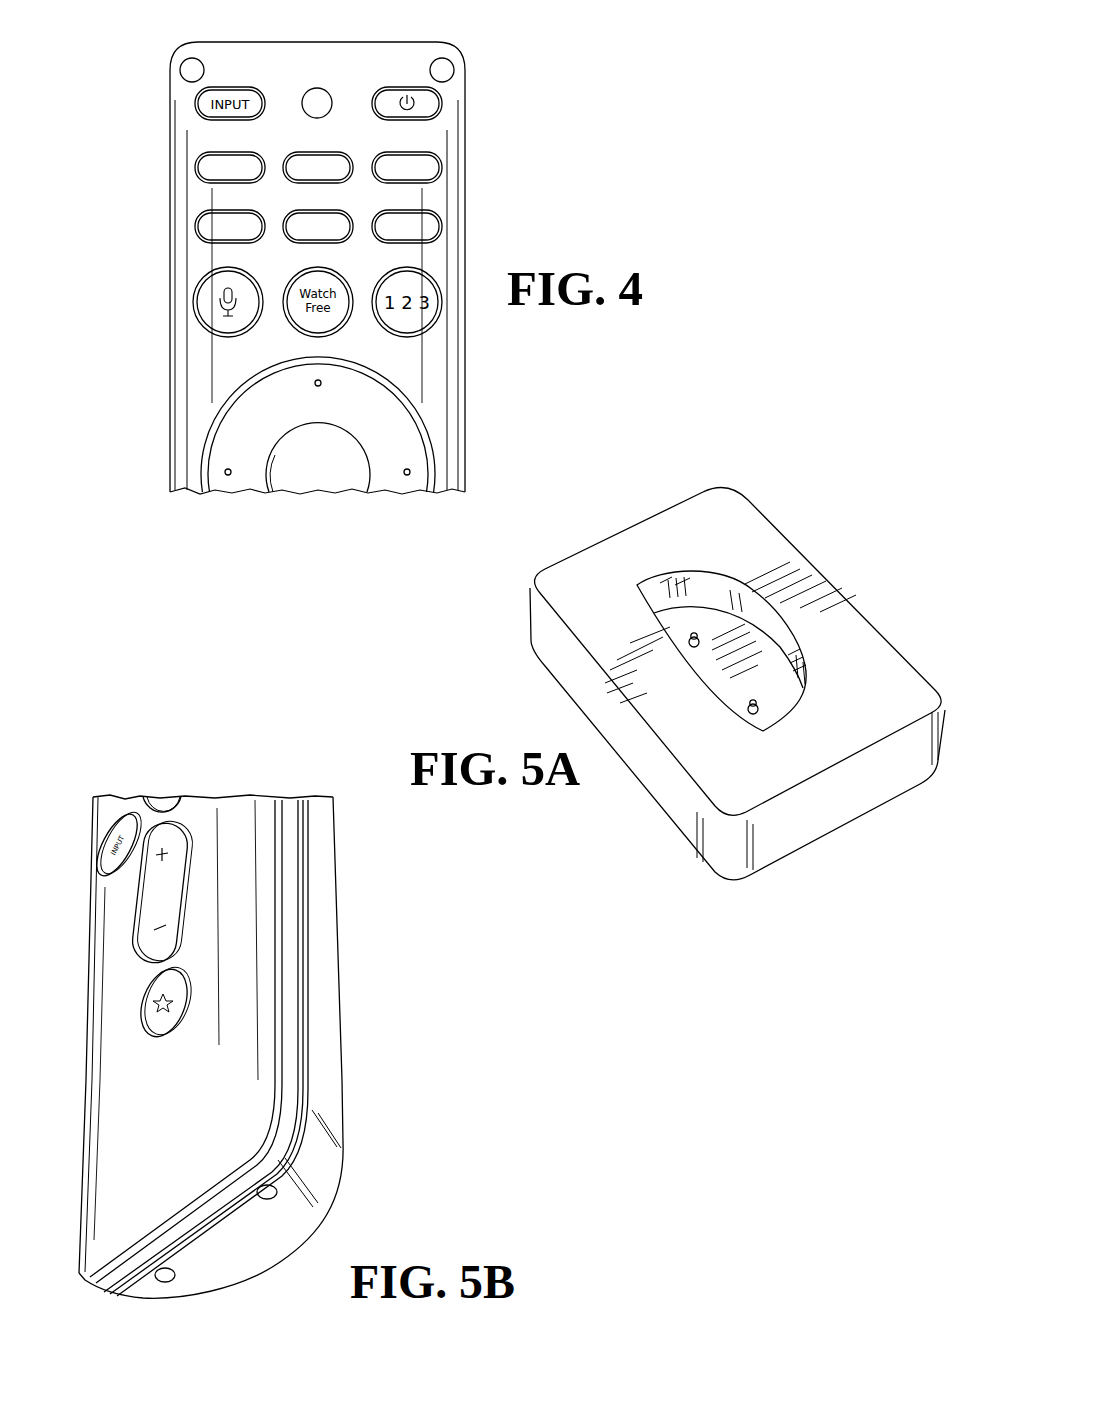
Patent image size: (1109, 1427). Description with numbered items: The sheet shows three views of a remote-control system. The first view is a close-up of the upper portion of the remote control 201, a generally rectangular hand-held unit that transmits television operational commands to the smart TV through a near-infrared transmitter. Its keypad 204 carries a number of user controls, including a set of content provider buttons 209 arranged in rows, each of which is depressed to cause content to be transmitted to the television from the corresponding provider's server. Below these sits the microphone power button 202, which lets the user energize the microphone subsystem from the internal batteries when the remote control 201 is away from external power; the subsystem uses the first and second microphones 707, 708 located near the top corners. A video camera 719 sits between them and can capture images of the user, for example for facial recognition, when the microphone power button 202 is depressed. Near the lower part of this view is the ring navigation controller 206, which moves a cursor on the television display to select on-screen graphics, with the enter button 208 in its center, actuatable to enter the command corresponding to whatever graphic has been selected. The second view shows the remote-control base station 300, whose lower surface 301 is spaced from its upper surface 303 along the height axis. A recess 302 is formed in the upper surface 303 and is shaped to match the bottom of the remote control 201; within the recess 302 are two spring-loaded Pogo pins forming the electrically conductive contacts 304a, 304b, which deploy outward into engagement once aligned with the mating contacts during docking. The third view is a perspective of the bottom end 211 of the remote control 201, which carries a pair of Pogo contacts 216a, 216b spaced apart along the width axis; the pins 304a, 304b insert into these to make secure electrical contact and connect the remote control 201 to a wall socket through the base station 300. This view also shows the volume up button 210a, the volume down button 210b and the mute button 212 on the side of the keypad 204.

In FIG. 4, the remote control 201 is at (327, 268).
In FIG. 4, the microphone power button 202 is at (196, 301).
In FIG. 4, the keypad 204 is at (222, 352).
In FIG. 4, the ring navigation controller 206 is at (405, 441).
In FIG. 4, the OK button 208 is at (342, 489).
In FIG. 4, the content provider buttons 209 is at (202, 170).
In FIG. 4, the first microphone 707 is at (183, 67).
In FIG. 4, the second microphone 708 is at (452, 73).
In FIG. 4, the video camera 719 is at (317, 88).
In FIG. 5A, the remote-control base station 300 is at (738, 695).
In FIG. 5A, the lower surface 301 is at (839, 823).
In FIG. 5A, the recess 302 is at (667, 593).
In FIG. 5A, the upper surface 303 is at (738, 652).
In FIG. 5A, the electrically conductive contact 304a is at (696, 632).
In FIG. 5A, the electrically conductive contact 304b is at (755, 699).
In FIG. 5B, the volume up button 210a is at (165, 851).
In FIG. 5B, the volume down button 210b is at (165, 918).
In FIG. 5B, the bottom end 211 is at (305, 1222).
In FIG. 5B, the mute button 212 is at (141, 1016).
In FIG. 5B, the electrically conductive contact 216a is at (165, 1282).
In FIG. 5B, the electrically conductive contact 216b is at (278, 1195).